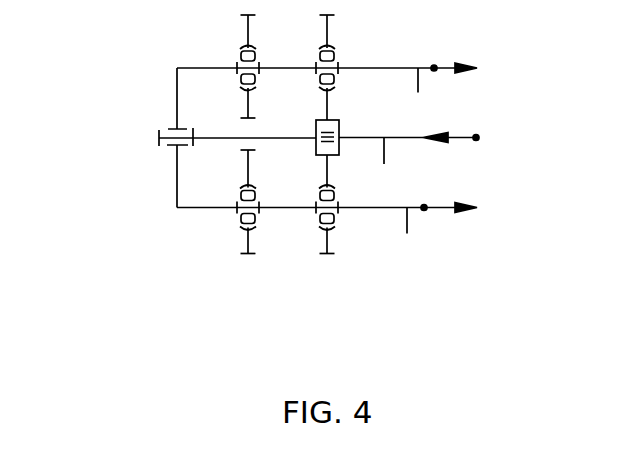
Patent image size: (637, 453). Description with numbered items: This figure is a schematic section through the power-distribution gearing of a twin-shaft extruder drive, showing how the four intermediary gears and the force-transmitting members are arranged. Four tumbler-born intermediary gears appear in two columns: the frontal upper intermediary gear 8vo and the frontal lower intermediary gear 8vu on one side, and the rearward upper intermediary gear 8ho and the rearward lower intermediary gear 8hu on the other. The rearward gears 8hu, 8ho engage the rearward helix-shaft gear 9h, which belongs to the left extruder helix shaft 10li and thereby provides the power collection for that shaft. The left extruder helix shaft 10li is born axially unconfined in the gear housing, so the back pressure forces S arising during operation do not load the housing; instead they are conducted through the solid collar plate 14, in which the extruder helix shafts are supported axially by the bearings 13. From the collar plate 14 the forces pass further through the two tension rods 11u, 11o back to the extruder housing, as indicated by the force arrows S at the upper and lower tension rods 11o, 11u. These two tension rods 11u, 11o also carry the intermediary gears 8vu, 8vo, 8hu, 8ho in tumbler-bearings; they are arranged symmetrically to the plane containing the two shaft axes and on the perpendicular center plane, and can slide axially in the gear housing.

The frontal upper intermediary gear 8vo is at (248, 36).
The rearward upper intermediary gear 8ho is at (327, 34).
The frontal lower intermediary gear 8vu is at (248, 238).
The rearward lower intermediary gear 8hu is at (327, 244).
The bearings 13 is at (168, 129).
The collar plate 14 is at (177, 176).
The rearward helix-shaft gear 9h is at (339, 126).
The upper tension rod 11o is at (418, 92).
The lower tension rod 11u is at (407, 234).
The left extruder helix shaft 10li is at (384, 164).